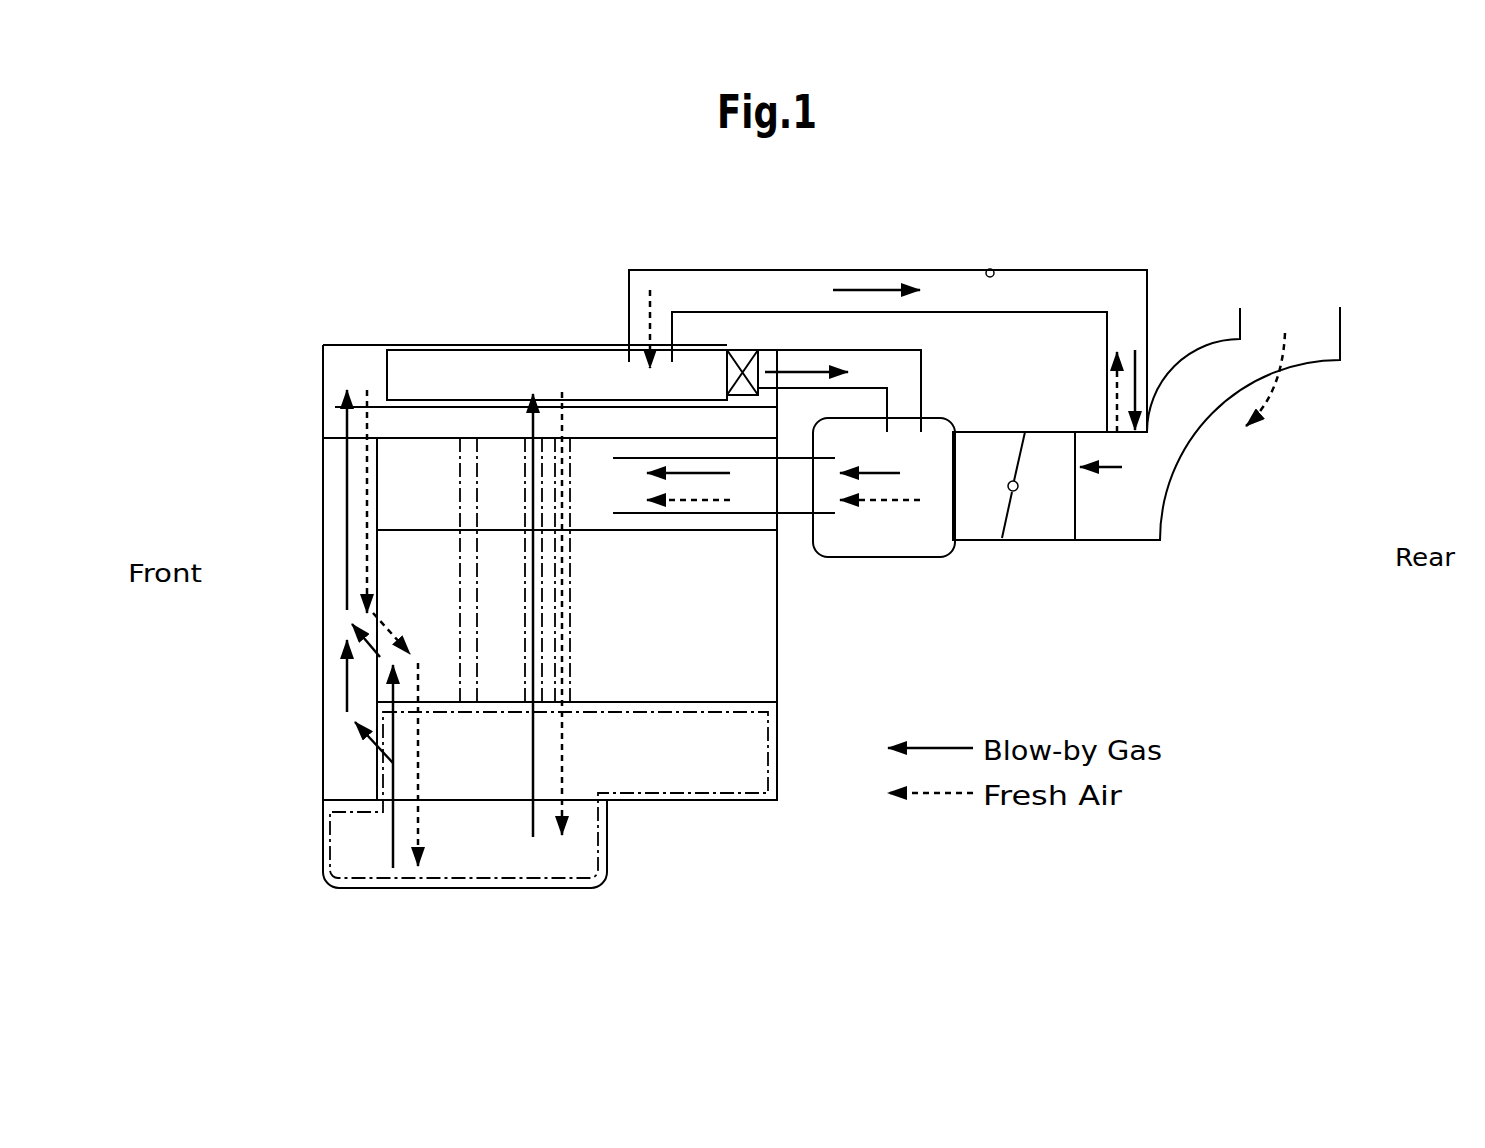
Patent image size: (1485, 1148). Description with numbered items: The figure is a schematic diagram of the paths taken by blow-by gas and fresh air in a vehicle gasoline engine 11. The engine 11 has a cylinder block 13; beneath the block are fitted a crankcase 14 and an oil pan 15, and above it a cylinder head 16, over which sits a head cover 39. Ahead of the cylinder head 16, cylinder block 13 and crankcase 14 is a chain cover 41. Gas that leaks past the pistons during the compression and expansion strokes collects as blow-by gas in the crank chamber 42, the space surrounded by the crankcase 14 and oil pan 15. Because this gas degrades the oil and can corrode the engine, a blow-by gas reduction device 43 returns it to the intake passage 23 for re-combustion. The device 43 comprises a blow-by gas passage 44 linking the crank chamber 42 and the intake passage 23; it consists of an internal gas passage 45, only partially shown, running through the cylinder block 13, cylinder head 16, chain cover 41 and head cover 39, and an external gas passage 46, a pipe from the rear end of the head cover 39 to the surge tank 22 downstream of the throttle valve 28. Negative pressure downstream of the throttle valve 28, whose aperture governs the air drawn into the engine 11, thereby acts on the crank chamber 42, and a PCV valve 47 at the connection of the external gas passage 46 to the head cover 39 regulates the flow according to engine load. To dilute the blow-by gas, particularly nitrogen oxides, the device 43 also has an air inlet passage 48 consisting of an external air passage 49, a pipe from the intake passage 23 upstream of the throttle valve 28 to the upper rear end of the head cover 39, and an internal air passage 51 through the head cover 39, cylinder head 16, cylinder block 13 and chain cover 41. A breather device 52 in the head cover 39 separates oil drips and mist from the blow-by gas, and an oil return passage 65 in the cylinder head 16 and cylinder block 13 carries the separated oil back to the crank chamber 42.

The gasoline engine 11 is at (306, 302).
The cylinder block 13 is at (777, 638).
The crankcase 14 is at (780, 787).
The oil pan 15 is at (323, 838).
The cylinder head 16 is at (784, 518).
The surge tank 22 is at (880, 557).
The intake passage 23 is at (1148, 522).
The throttle valve 28 is at (1025, 452).
The head cover 39 is at (323, 367).
The chain cover 41 is at (323, 711).
The crank chamber 42 is at (768, 726).
The blow-by gas reduction device 43 is at (598, 255).
The blow-by gas passage 44 is at (922, 348).
The internal gas passage 45 is at (533, 589).
The external gas passage 46 is at (907, 387).
The PCV valve 47 is at (770, 349).
The air inlet passage 48 is at (924, 268).
The external air passage 49 is at (989, 269).
The internal air passage 51 is at (564, 589).
The breather device 52 is at (522, 355).
The oil return passage 65 is at (468, 589).